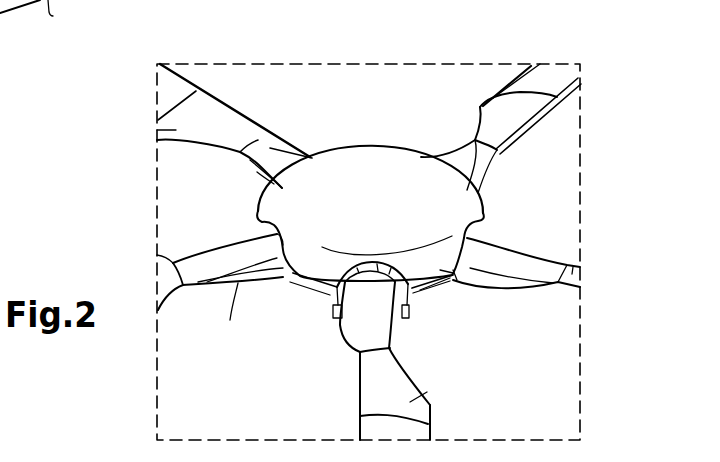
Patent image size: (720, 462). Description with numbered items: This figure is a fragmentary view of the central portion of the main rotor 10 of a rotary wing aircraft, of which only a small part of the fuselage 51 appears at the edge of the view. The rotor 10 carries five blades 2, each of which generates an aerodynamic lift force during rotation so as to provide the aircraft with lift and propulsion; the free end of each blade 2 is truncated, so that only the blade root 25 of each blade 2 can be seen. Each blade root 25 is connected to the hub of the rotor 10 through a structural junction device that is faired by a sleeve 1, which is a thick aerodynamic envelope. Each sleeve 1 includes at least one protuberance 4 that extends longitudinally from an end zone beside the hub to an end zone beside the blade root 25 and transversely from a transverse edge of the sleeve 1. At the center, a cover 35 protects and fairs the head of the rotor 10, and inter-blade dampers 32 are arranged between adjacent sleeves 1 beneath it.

The main rotor 10 is at (304, 66).
The sleeve 1 is at (284, 140).
The blade 2 is at (163, 64).
The protuberance 4 is at (258, 172).
The blade root 25 is at (502, 114).
The inter-blade damper 32 is at (312, 283).
The cover 35 is at (375, 157).
The fuselage 51 is at (45, 20).